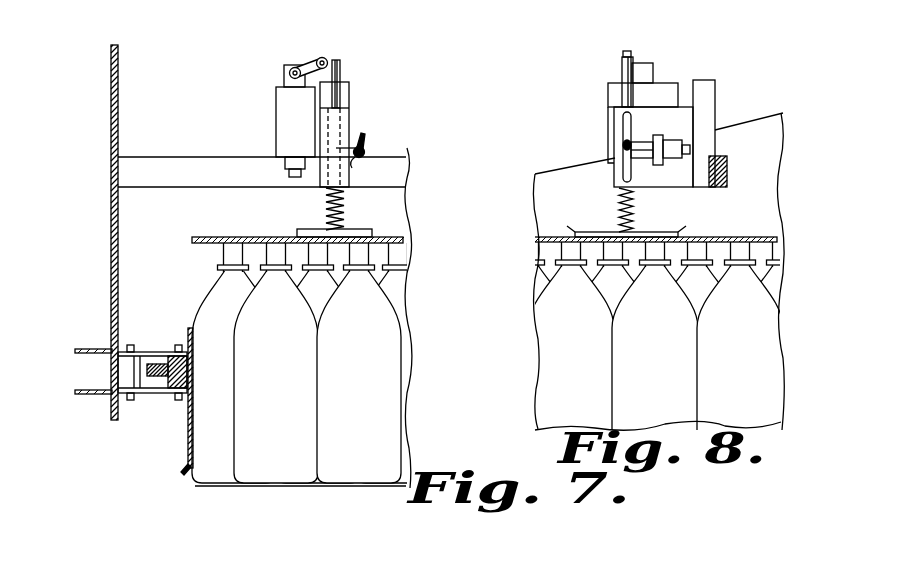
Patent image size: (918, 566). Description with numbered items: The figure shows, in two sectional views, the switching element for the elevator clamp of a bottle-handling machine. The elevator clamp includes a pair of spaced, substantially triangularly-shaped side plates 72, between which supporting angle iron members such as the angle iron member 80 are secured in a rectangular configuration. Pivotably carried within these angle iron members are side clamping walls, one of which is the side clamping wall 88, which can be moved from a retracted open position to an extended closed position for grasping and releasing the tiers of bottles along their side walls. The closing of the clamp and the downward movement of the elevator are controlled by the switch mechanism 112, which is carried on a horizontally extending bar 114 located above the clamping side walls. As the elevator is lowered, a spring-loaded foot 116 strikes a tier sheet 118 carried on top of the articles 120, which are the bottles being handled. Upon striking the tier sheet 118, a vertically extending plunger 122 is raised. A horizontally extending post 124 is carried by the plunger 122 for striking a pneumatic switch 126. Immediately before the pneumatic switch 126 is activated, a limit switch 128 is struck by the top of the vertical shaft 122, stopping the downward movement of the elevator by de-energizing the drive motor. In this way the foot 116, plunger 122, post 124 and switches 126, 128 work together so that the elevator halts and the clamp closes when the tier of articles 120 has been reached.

In FIG. 7, the side plates 72 is at (119, 78).
In FIG. 8, the side plates 72 is at (582, 205).
In FIG. 7, the supporting angle iron member 80 is at (79, 392).
In FIG. 7, the side clamping wall 88 is at (189, 433).
In FIG. 7, the switch mechanism 112 is at (367, 110).
In FIG. 8, the switch mechanism 112 is at (690, 67).
In FIG. 7, the horizontally extending bar 114 is at (168, 172).
In FIG. 7, the spring-loaded foot 116 is at (297, 232).
In FIG. 8, the spring-loaded foot 116 is at (662, 234).
In FIG. 7, the tier sheet 118 is at (205, 237).
In FIG. 7, the articles 120 is at (224, 305).
In FIG. 8, the articles 120 is at (548, 394).
In FIG. 7, the vertically extending plunger 122 is at (349, 73).
In FIG. 7, the horizontally extending post 124 is at (365, 145).
In FIG. 8, the horizontally extending post 124 is at (624, 139).
In FIG. 8, the pneumatic switch 126 is at (672, 145).
In FIG. 7, the limit switch 128 is at (311, 58).